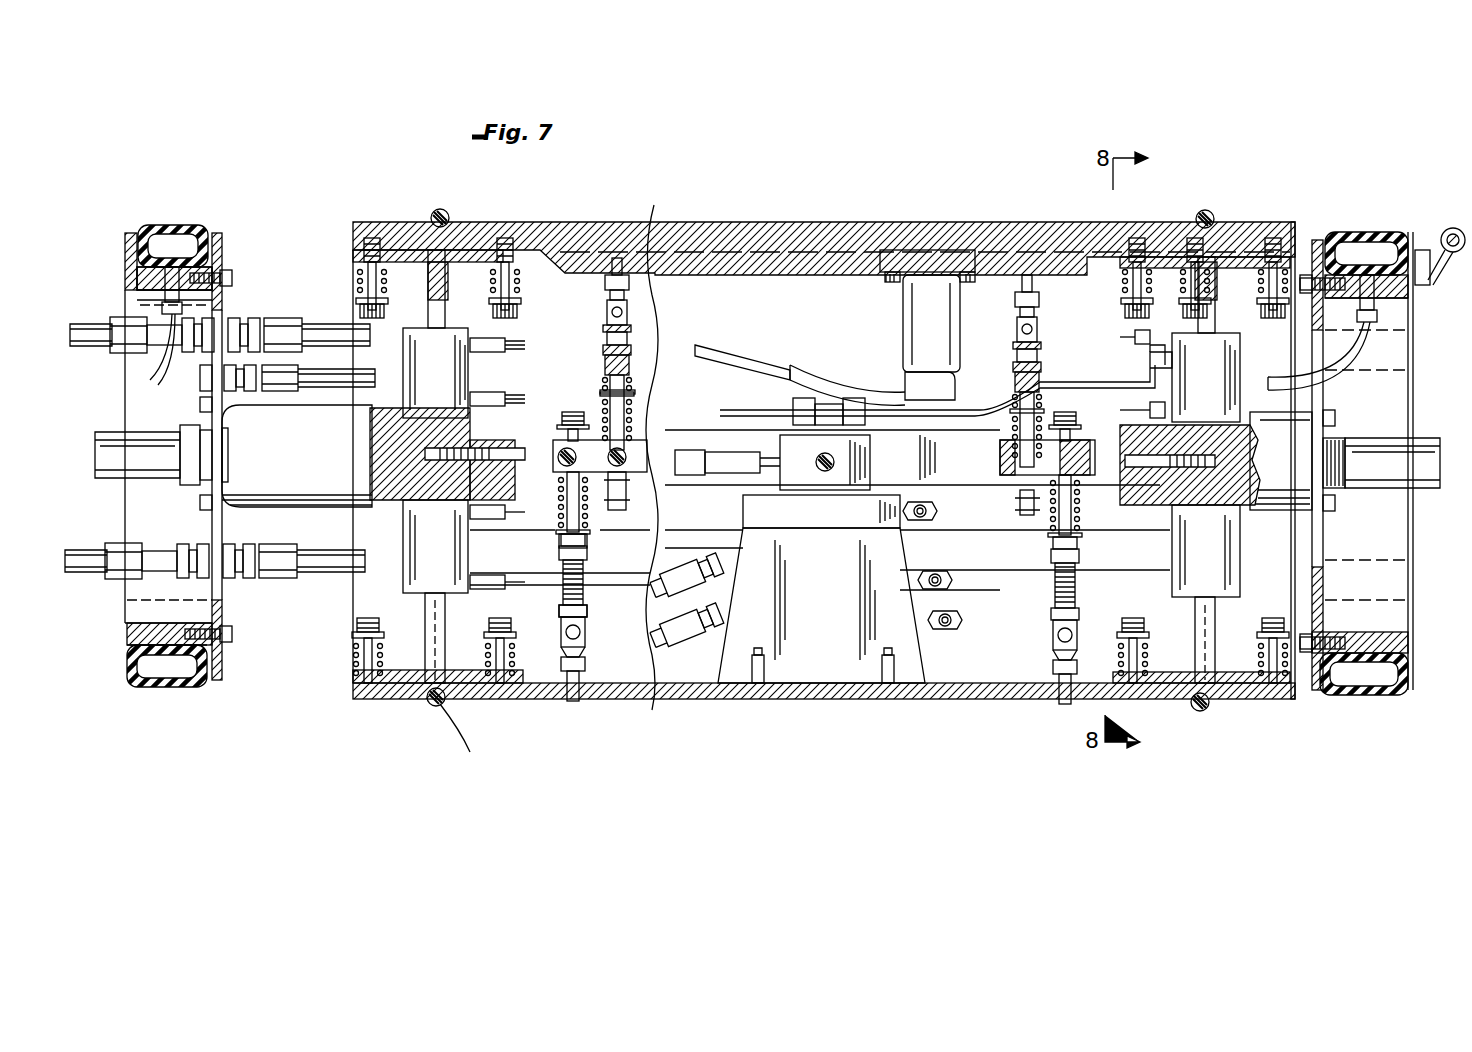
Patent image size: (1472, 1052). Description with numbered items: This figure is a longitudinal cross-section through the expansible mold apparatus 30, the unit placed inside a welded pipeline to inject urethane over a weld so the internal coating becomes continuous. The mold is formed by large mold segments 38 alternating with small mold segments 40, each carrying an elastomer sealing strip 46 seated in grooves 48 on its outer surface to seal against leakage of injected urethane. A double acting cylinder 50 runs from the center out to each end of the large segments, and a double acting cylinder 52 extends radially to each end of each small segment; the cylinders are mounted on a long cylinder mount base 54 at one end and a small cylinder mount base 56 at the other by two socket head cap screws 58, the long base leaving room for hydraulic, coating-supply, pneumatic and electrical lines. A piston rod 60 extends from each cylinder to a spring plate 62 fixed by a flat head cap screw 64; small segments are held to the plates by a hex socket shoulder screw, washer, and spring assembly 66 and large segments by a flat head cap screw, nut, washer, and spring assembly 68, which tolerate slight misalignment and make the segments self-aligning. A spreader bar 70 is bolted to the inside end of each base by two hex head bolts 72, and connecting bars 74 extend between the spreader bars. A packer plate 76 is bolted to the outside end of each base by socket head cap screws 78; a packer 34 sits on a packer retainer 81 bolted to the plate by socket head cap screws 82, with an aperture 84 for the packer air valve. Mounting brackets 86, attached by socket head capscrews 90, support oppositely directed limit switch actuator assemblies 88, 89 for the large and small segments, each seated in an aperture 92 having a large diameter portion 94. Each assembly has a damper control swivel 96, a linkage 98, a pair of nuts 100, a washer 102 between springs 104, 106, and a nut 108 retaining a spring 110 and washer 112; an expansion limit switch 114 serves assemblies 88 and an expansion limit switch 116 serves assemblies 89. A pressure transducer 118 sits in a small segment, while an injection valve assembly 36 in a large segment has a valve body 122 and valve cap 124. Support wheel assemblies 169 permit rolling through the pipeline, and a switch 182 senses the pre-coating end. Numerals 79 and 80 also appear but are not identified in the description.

The expansible mold apparatus 30 is at (993, 185).
The packer 34 is at (172, 225).
The injection valve assembly 36 is at (728, 553).
The large mold segments 38 is at (1018, 500).
The small mold segments 40 is at (790, 222).
The sealing strip 46 is at (1205, 222).
The grooves 48 is at (464, 743).
The double acting cylinder 50 is at (395, 588).
The double acting cylinder 52 is at (400, 345).
The long cylinder mount base 54 is at (290, 455).
The small cylinder mount base 56 is at (1315, 508).
The socket head cap screws 58 is at (400, 600).
The piston rod 60 is at (430, 300).
The spring plate 62 is at (1245, 700).
The flat head cap screw 64 is at (1195, 238).
The hex socket shoulder screw, washer, and spring assembly 66 is at (1137, 290).
The flat head cap screw, nut, washer, and spring assembly 68 is at (530, 700).
The spreader bar 70 is at (520, 450).
The hex head bolts 72 is at (520, 480).
The connecting bars 74 is at (1010, 500).
The packer plate 76 is at (212, 650).
The socket head cap screws 78 is at (200, 405).
The tube assembly 79 is at (96, 586).
The tube 80 is at (1360, 347).
The packer retainer 81 is at (125, 267).
The socket head cap screws 82 is at (232, 650).
The aperture 84 is at (1405, 290).
The mounting brackets 86 is at (660, 400).
The limit switch actuator assemblies 88 is at (596, 615).
The limit switch actuator assemblies 89 is at (1000, 354).
The socket head capscrews 90 is at (630, 472).
The aperture 92 is at (1000, 460).
The large diameter portion 94 is at (1085, 472).
The damper control swivel 96 is at (598, 700).
The linkage 98 is at (560, 700).
The nuts 100 is at (585, 562).
The washer 102 is at (605, 412).
The spring 104 is at (605, 420).
The spring 106 is at (662, 350).
The nut 108 is at (612, 510).
The spring 110 is at (1060, 465).
The washer 112 is at (1080, 470).
The expansion limit switch 114 is at (1170, 700).
The expansion limit switch 116 is at (1065, 700).
The pressure transducer 118 is at (930, 250).
The valve body 122 is at (833, 604).
The valve cap 124 is at (833, 521).
The support wheel assemblies 169 is at (1420, 488).
The switch 182 is at (1452, 228).